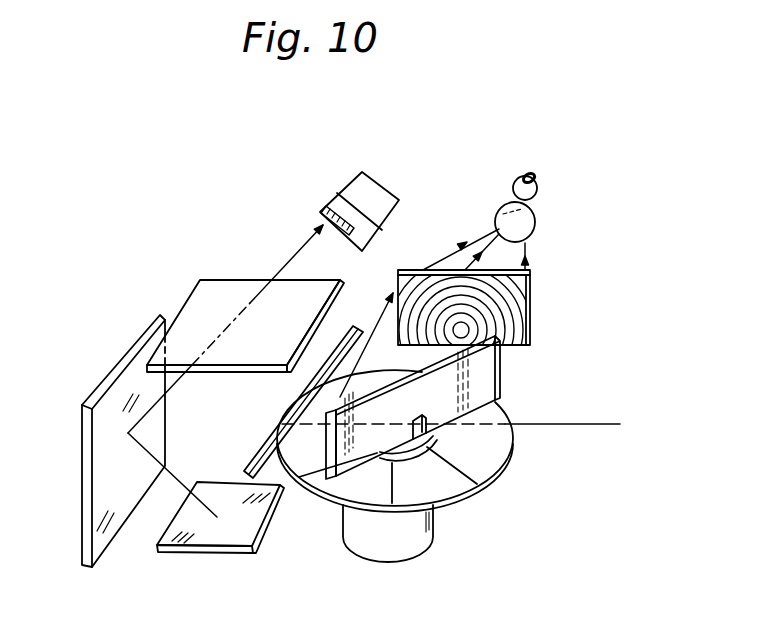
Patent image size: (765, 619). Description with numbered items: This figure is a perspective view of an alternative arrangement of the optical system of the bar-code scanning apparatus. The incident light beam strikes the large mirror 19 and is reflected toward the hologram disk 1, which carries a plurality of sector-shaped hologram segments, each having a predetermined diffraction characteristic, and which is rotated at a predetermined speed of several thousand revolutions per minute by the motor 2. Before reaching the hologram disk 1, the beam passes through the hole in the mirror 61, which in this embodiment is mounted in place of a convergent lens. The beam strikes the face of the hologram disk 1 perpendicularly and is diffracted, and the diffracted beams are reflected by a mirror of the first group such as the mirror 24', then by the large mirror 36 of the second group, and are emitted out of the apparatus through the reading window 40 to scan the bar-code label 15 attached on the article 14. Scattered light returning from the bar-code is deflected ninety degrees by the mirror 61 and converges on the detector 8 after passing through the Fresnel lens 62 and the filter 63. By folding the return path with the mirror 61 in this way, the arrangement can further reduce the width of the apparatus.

The hologram disk 1 is at (497, 470).
The motor 2 is at (434, 530).
The detector 8 is at (537, 190).
The article 14 is at (383, 183).
The bar-code label 15 is at (327, 207).
The large mirror 19 is at (355, 327).
The mirror 24' is at (227, 541).
The large mirror 36 is at (82, 421).
The reading window 40 is at (202, 280).
The mirror with a hole 61 is at (497, 371).
The Fresnel lens 62 is at (531, 300).
The filter 63 is at (536, 226).